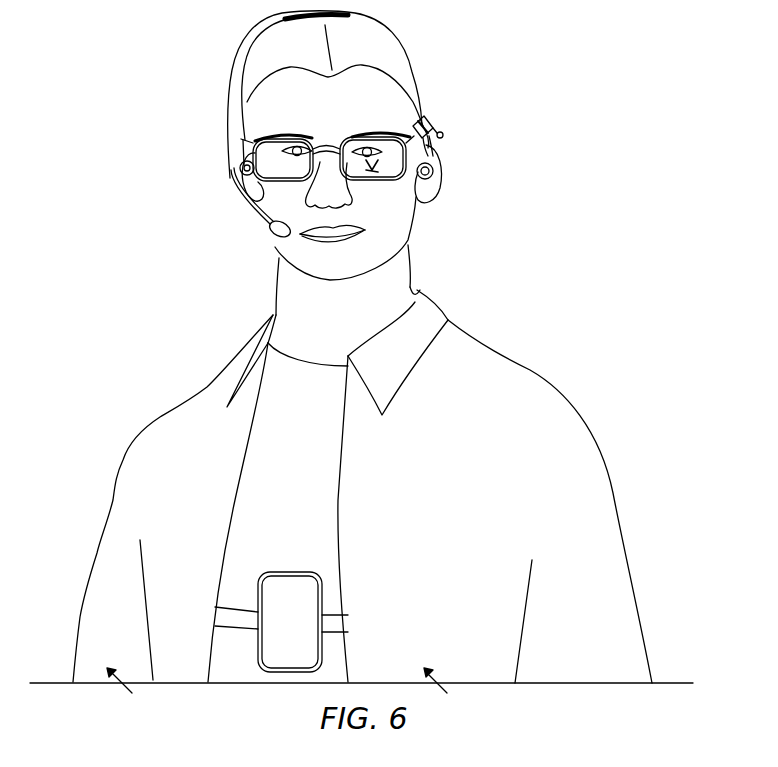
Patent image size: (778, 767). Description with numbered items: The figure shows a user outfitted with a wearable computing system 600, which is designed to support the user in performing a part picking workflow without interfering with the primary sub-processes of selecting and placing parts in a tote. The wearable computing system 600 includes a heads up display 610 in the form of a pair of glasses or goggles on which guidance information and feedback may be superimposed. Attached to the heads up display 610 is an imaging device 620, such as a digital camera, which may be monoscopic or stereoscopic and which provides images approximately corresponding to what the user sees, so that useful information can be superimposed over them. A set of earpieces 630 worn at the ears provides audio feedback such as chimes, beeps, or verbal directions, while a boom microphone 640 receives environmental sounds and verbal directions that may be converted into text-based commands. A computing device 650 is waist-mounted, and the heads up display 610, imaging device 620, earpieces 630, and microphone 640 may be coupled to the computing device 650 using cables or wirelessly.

The wearable computing system 600 is at (167, 77).
The heads up display 610 is at (405, 178).
The imaging device 620 is at (442, 132).
The earpieces 630 is at (238, 171).
The microphone 640 is at (271, 238).
The computing device 650 is at (286, 572).